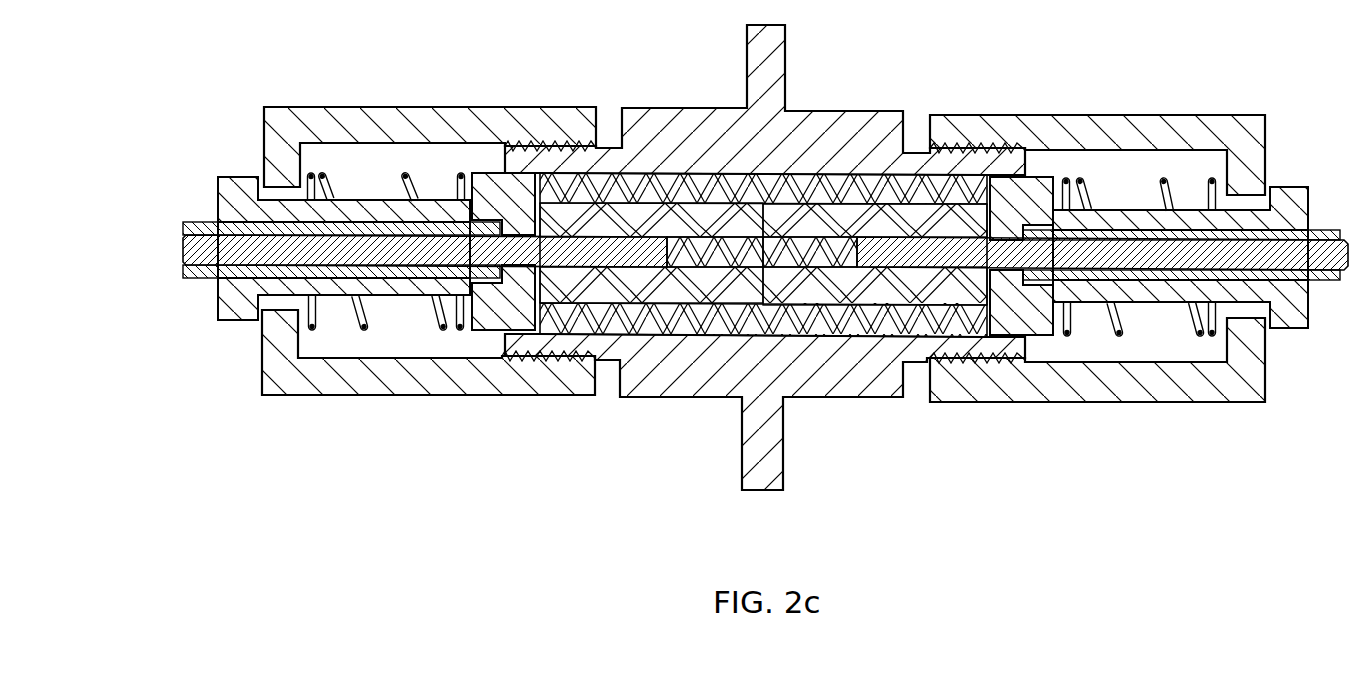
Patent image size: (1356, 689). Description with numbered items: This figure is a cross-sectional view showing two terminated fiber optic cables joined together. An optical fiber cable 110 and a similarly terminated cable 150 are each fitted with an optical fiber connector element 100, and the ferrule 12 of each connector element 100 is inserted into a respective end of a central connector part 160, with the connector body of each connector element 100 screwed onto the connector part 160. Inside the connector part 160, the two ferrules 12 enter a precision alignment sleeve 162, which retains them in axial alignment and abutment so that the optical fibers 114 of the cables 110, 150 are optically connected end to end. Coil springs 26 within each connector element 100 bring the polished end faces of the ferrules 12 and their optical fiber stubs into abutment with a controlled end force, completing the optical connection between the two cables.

The optical fiber connector element 100 is at (305, 95).
The coil springs 26 is at (405, 173).
The optical fiber 114 is at (180, 222).
The similarly terminated cable 150 is at (184, 270).
The optical fiber cable 110 is at (1349, 272).
The connector part 160 is at (834, 105).
The precision alignment sleeve 162 is at (907, 183).
The ferrule 12 is at (712, 293).